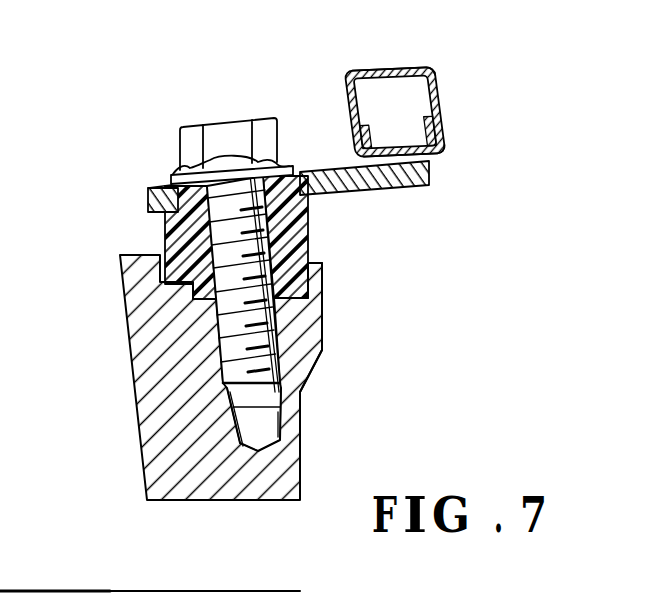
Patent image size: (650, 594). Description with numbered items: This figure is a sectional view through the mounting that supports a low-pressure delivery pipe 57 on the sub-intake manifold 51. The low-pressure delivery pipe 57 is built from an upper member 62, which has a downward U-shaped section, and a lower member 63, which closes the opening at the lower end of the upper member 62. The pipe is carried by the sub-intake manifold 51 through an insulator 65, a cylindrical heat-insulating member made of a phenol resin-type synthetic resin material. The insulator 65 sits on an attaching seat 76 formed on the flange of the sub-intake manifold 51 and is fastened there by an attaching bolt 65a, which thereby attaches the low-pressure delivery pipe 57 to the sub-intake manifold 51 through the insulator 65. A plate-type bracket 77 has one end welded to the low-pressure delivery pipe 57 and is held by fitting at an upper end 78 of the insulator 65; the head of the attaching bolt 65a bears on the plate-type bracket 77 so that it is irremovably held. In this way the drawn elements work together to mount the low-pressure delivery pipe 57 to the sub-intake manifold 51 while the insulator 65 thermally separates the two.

The sub-intake manifold 51 is at (140, 443).
The low-pressure delivery pipe 57 is at (458, 97).
The upper member 62 is at (390, 68).
The lower member 63 is at (438, 158).
The insulator 65 is at (308, 250).
The attaching bolt 65a is at (227, 120).
The attaching seat 76 is at (313, 303).
The plate-type bracket 77 is at (432, 169).
The upper end 78 is at (150, 196).